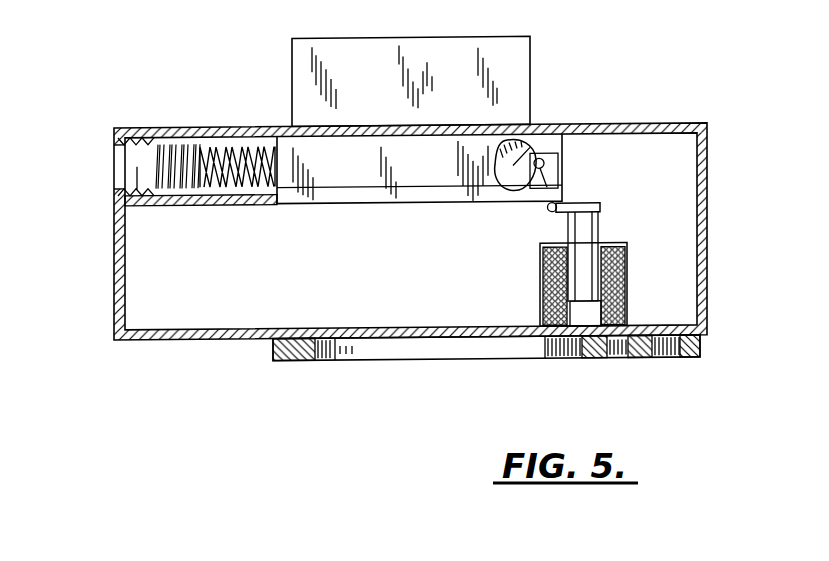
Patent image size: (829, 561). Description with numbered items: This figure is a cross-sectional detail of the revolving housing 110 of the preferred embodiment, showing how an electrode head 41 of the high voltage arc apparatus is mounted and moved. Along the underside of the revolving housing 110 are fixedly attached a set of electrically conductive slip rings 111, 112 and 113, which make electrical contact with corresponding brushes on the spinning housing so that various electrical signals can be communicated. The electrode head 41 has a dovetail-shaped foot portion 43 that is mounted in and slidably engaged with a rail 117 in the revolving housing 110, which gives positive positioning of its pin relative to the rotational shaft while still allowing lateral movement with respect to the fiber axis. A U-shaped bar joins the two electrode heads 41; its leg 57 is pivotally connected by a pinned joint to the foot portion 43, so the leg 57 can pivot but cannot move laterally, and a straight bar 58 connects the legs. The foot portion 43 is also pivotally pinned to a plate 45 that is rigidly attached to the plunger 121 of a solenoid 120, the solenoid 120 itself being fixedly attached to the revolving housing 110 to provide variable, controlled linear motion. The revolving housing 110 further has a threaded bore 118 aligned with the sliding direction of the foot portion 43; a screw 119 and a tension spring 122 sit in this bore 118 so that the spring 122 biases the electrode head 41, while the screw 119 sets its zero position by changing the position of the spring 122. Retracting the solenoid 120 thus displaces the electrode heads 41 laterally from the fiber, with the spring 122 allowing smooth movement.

The electrode head 41 is at (453, 58).
The dovetail-shaped foot portion 43 is at (527, 148).
The plate 45 is at (587, 205).
The leg 57 is at (558, 161).
The straight bar 58 is at (552, 210).
The revolving housing 110 is at (707, 206).
The slip ring 111 is at (690, 361).
The slip ring 112 is at (643, 360).
The slip ring 113 is at (307, 361).
The rail 117 is at (421, 182).
The threaded bore 118 is at (137, 170).
The screw 119 is at (175, 142).
The solenoid 120 is at (540, 288).
The plunger 121 is at (585, 229).
The tension spring 122 is at (252, 140).